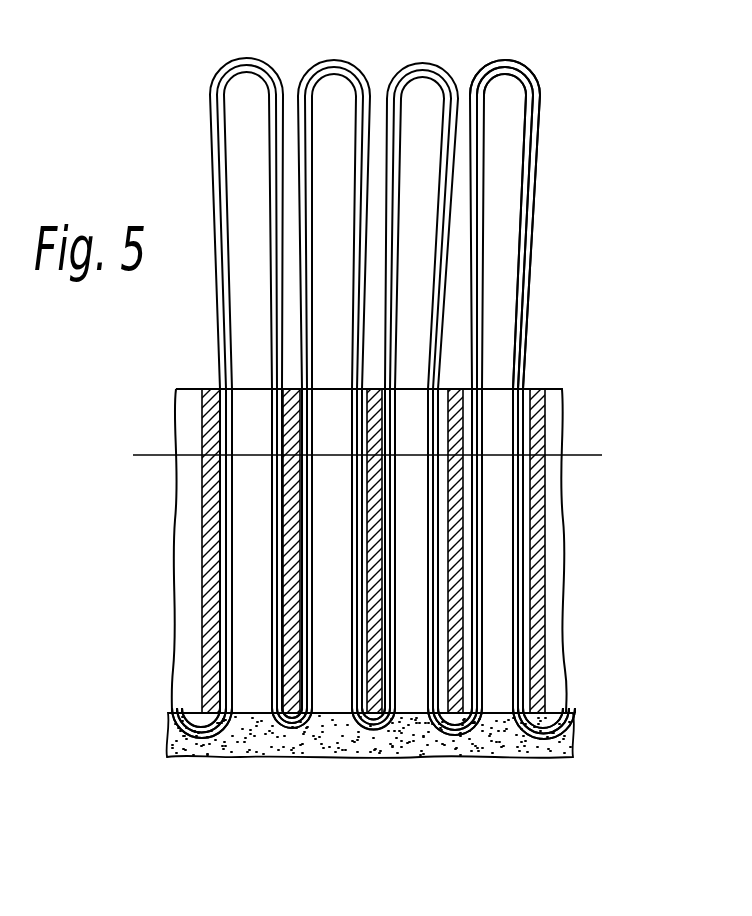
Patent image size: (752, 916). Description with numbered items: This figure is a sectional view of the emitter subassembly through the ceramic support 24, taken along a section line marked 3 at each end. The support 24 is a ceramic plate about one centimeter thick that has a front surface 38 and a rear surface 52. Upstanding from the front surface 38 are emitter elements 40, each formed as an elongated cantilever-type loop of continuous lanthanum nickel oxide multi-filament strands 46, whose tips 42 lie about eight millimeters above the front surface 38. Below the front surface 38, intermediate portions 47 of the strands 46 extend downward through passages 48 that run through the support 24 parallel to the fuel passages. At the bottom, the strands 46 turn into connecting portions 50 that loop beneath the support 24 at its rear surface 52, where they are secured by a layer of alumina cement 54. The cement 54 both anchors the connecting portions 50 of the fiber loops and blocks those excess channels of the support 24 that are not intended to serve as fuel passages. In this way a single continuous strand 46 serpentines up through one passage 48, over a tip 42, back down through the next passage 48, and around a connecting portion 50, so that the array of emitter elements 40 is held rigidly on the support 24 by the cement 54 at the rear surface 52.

The ceramic support 24 is at (411, 523).
The front surface 38 is at (186, 389).
The emitter element 40 is at (404, 418).
The tip 42 is at (503, 62).
The multi-filament strand 46 is at (541, 236).
The intermediate portion 47 is at (232, 427).
The passage 48 is at (507, 400).
The connecting portion 50 is at (279, 740).
The rear surface 52 is at (566, 733).
The alumina cement 54 is at (172, 736).
The section line 3- 3 is at (602, 498).